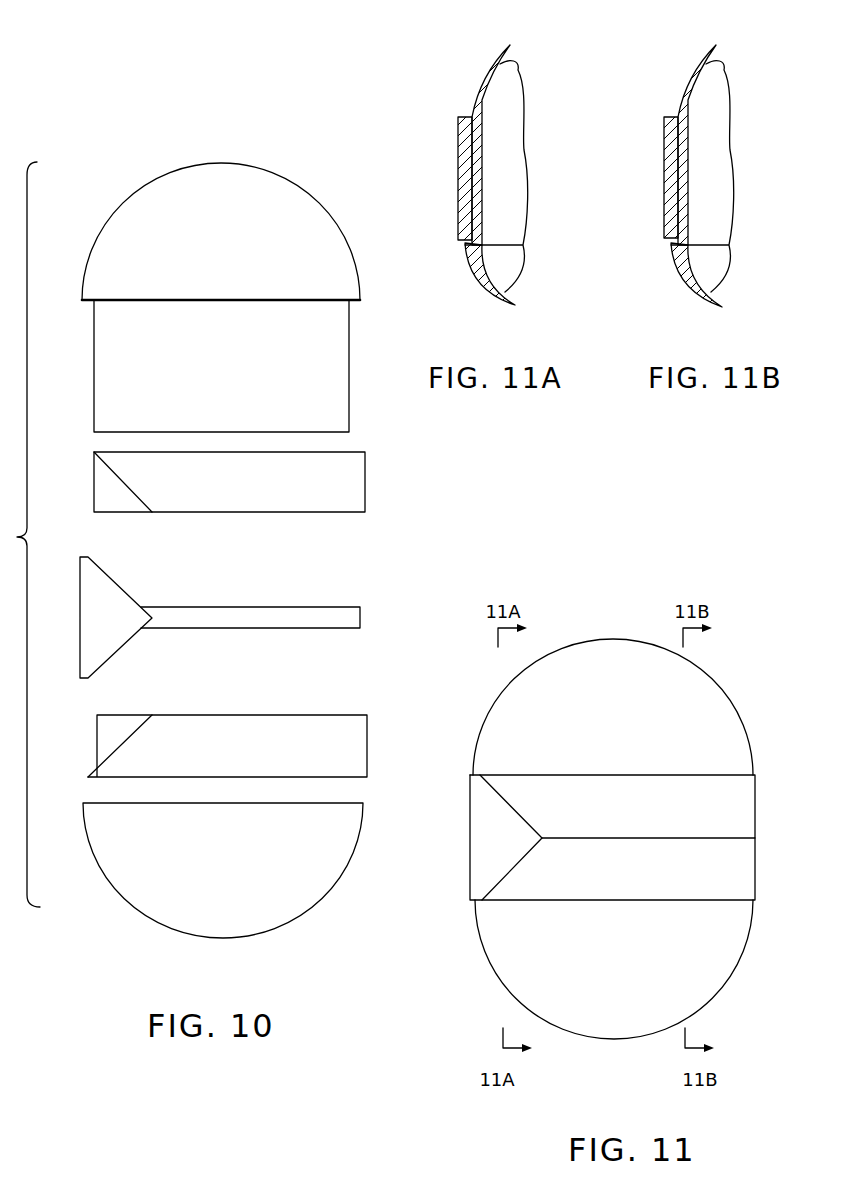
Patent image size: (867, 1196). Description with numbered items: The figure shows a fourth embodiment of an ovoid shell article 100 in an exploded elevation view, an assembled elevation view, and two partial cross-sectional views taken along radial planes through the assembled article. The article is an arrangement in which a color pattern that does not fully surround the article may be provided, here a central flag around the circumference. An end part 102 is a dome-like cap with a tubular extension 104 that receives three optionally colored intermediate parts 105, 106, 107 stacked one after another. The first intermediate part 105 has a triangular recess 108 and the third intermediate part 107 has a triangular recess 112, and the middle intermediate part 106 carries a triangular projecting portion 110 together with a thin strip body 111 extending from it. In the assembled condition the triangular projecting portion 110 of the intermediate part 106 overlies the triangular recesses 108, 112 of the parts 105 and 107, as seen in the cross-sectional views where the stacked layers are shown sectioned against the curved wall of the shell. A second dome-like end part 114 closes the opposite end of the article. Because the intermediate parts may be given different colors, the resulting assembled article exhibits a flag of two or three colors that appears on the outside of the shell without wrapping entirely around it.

In FIG. 10, the shell article 100 is at (82, 717).
In FIG. 10, the end part 102 is at (130, 220).
In FIG. 11A, the end part 102 is at (508, 56).
In FIG. 11B, the end part 102 is at (715, 53).
In FIG. 11, the end part 102 is at (710, 690).
In FIG. 10, the tubular extension 104 is at (117, 357).
In FIG. 11A, the tubular extension 104 is at (483, 182).
In FIG. 11B, the tubular extension 104 is at (690, 142).
In FIG. 10, the intermediate part 105 is at (355, 483).
In FIG. 11A, the intermediate part 105 is at (461, 118).
In FIG. 11B, the intermediate part 105 is at (665, 133).
In FIG. 11, the intermediate part 105 is at (730, 818).
In FIG. 10, the intermediate part 106 is at (358, 620).
In FIG. 11A, the intermediate part 106 is at (461, 187).
In FIG. 11B, the intermediate part 106 is at (672, 182).
In FIG. 10, the intermediate part 107 is at (293, 725).
In FIG. 11A, the intermediate part 107 is at (461, 233).
In FIG. 11B, the intermediate part 107 is at (668, 227).
In FIG. 11, the intermediate part 107 is at (730, 870).
In FIG. 10, the triangular recess 108 is at (103, 488).
In FIG. 10, the triangular projecting portion 110 is at (117, 597).
In FIG. 11, the triangular projecting portion 110 is at (482, 818).
In FIG. 10, the strip shaft 111 is at (217, 618).
In FIG. 10, the triangular recess 112 is at (120, 725).
In FIG. 10, the bottom dome cap 114 is at (325, 878).
In FIG. 11A, the bottom dome cap 114 is at (496, 287).
In FIG. 11B, the bottom dome cap 114 is at (702, 285).
In FIG. 11, the bottom dome cap 114 is at (693, 978).